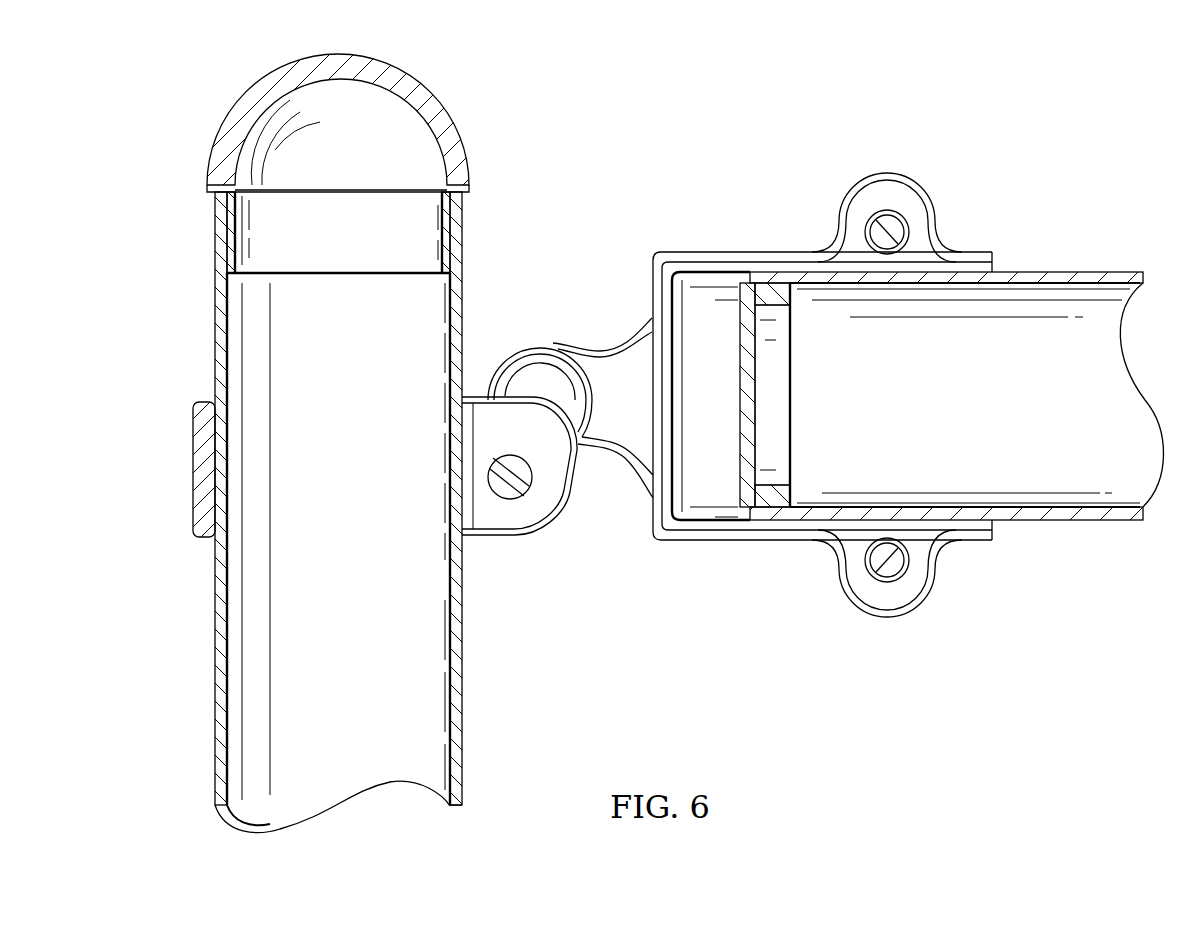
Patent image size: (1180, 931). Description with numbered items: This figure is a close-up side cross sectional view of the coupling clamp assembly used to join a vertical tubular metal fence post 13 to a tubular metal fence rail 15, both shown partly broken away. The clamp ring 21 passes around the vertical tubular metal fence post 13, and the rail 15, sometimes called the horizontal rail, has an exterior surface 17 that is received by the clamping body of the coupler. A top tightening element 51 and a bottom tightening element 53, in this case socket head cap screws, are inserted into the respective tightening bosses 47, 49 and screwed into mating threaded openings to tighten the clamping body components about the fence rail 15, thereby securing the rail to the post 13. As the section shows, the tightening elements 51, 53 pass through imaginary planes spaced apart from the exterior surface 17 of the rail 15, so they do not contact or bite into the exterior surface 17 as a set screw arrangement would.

The vertical tubular metal fence post 13 is at (215, 622).
The tubular metal fence rail 15 is at (1058, 528).
The exterior surface 17 is at (1068, 271).
The clamp ring 21 is at (193, 479).
The tightening boss 47 is at (906, 178).
The tightening boss 49 is at (906, 616).
The top tightening element 51 is at (897, 231).
The bottom tightening element 53 is at (897, 562).